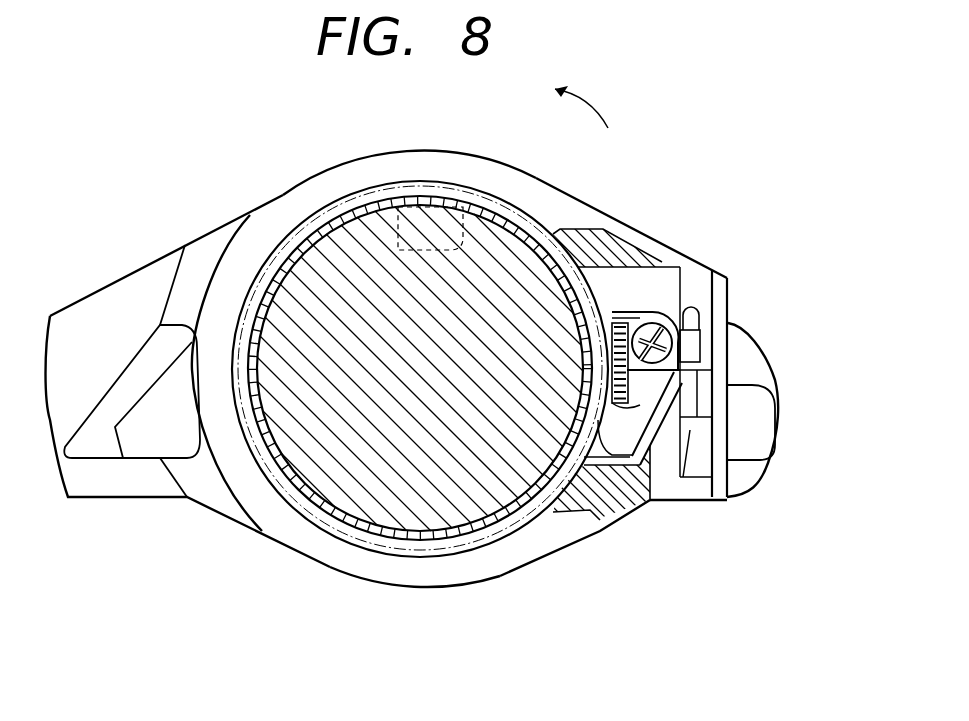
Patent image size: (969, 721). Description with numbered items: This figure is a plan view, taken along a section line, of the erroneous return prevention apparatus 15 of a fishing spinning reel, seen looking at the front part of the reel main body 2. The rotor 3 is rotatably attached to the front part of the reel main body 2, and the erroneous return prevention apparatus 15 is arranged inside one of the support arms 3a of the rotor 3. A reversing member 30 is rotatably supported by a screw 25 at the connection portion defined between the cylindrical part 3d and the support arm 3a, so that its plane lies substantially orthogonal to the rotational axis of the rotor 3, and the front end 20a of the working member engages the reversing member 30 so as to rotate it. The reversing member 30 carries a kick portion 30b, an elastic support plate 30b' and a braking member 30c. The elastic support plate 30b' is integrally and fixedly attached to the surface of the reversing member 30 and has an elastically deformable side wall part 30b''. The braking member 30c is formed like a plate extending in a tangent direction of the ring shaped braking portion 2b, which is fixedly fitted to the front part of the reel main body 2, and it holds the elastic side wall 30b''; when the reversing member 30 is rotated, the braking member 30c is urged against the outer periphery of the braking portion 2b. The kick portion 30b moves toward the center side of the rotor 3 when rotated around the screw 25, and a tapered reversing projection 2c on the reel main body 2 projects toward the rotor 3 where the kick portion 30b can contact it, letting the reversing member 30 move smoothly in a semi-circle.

The reel main body 2 is at (473, 508).
The ring shaped braking portion 2b is at (302, 253).
The reversing projection 2c is at (398, 207).
The rotor 3 is at (347, 163).
The support arm 3a is at (135, 280).
The cylindrical part 3d is at (467, 181).
The erroneous return prevention apparatus 15 is at (703, 243).
The front end of working member 20a is at (695, 315).
The screw 25 is at (667, 343).
The reversing member 30 is at (667, 382).
The kick portion 30b is at (672, 473).
The elastic support plate 30b' is at (675, 328).
The elastic side wall part 30b'' is at (725, 454).
The braking member 30c is at (612, 322).